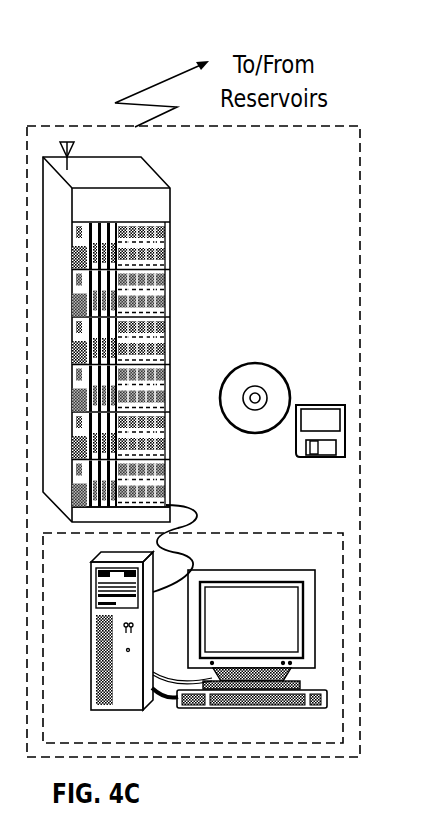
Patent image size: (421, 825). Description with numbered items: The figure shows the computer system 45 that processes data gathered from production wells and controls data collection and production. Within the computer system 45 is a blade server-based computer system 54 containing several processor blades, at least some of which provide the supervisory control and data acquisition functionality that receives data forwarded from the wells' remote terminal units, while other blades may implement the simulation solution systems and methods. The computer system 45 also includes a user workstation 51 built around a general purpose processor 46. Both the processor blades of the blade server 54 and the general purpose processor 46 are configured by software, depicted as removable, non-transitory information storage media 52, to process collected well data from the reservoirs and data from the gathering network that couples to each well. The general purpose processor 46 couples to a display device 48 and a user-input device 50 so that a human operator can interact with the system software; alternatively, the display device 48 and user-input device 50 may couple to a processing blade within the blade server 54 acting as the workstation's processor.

The computer system 45 is at (345, 164).
The general purpose processor 46 is at (155, 651).
The display device 48 is at (303, 668).
The user-input device 50 is at (318, 708).
The user workstation 51 is at (81, 571).
The information storage media 52 is at (308, 404).
The blade server-based computer system 54 is at (157, 168).